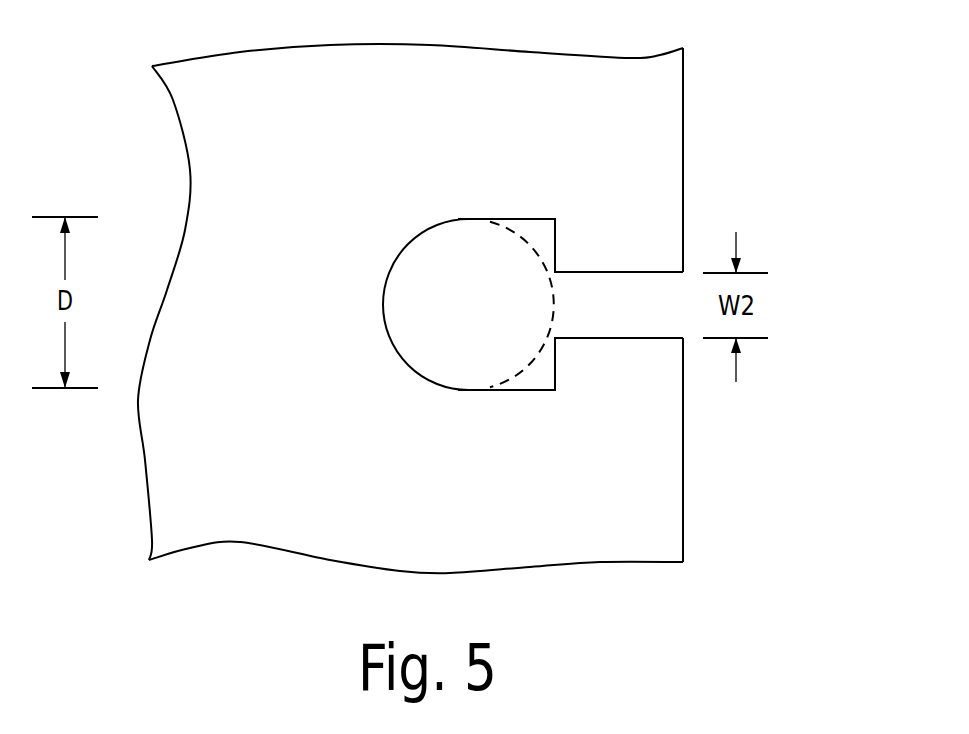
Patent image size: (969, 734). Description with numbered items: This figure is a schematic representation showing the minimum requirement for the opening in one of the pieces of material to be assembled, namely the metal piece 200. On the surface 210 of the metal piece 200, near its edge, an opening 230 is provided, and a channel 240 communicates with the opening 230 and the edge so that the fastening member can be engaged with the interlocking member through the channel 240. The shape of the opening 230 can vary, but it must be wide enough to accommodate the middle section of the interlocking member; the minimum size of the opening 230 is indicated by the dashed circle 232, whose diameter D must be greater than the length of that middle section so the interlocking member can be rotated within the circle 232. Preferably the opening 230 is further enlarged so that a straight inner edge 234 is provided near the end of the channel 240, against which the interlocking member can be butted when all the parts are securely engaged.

The metal piece 200 is at (485, 303).
The surface 210 is at (300, 293).
The opening 230 is at (470, 252).
The dashed circle 232 is at (522, 368).
The straight inner edge 234 is at (557, 250).
The channel 240 is at (612, 321).